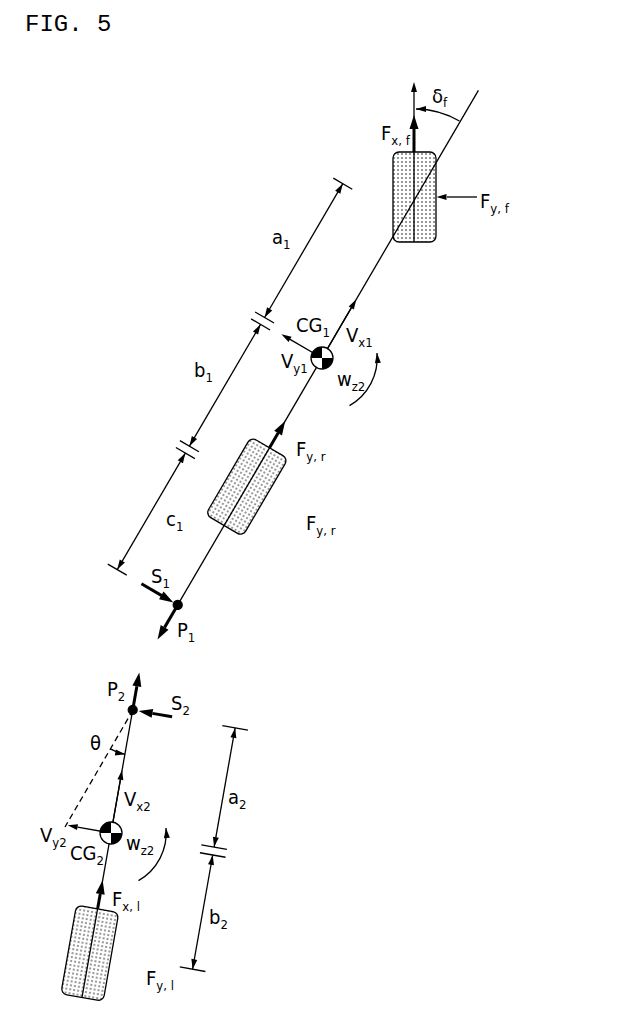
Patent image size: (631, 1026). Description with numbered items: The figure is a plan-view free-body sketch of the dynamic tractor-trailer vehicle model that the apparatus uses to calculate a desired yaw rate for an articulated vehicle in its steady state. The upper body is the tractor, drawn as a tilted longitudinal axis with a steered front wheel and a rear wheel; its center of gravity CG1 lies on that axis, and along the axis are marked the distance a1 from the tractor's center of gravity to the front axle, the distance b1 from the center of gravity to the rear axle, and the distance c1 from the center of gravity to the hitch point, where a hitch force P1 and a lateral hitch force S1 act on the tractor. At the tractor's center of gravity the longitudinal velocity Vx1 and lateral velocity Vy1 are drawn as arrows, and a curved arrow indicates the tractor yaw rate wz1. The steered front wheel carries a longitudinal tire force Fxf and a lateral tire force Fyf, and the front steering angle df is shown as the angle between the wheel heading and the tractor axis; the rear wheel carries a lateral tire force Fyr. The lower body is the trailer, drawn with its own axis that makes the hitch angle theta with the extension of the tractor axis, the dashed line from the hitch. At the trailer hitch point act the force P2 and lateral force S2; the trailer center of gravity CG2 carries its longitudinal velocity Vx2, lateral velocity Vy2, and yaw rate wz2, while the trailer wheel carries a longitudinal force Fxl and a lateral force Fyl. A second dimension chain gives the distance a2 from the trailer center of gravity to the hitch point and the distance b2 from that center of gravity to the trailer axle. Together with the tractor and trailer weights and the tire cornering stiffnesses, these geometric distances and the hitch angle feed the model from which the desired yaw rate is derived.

The center of gravity of tractor CG1 is at (322, 358).
The center of gravity of trailer CG2 is at (111, 833).
The hitch point force on tractor P1 is at (169, 620).
The hitch point force on trailer P2 is at (135, 693).
The hitch lateral force on tractor S1 is at (157, 593).
The hitch lateral force on trailer S2 is at (155, 714).
The distance from the center of gravity of the tractor to the front axle a1 is at (303, 250).
The distance from the center of gravity of the tractor to the rear axle b1 is at (225, 385).
The distance from the center of gravity of the tractor to the hitch point c1 is at (151, 512).
The distance from the center of gravity of the trailer to the hitch point a2 is at (224, 788).
The distance from the center of gravity of the trailer to the trailer axle b2 is at (203, 912).
The tractor longitudinal velocity Vx1 is at (338, 329).
The tractor lateral velocity Vy1 is at (302, 346).
The trailer longitudinal velocity Vx2 is at (116, 801).
The trailer lateral velocity Vy2 is at (89, 829).
The tractor yaw rate wz1 is at (365, 379).
The trailer yaw rate wz2 is at (154, 854).
The front tire longitudinal force Fxf is at (414, 162).
The front tire lateral force Fyf is at (457, 197).
The rear tire lateral force Fyr is at (264, 496).
The trailer tire longitudinal force Fxl is at (100, 894).
The trailer tire lateral force Fyl is at (143, 949).
The front steering angle df is at (437, 113).
The hitch angle theta is at (99, 768).